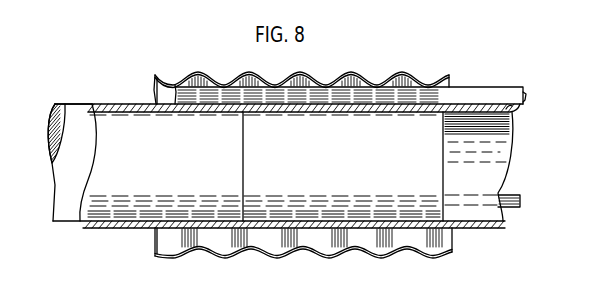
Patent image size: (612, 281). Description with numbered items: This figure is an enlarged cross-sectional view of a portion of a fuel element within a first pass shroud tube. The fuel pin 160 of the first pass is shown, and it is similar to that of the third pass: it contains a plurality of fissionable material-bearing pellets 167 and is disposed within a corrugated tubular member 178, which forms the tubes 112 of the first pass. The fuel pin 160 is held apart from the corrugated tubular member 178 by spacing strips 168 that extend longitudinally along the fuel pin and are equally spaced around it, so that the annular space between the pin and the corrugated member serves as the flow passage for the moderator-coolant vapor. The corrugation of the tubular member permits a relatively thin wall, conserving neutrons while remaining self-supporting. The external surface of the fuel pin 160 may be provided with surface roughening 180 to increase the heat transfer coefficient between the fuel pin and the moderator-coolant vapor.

The tube 112 is at (303, 149).
The fuel pin 160 is at (72, 203).
The fissionable material-bearing pellets 167 is at (325, 166).
The spacing strips 168 is at (470, 98).
The corrugated tubular member 178 is at (401, 78).
The surface roughening 180 is at (500, 108).